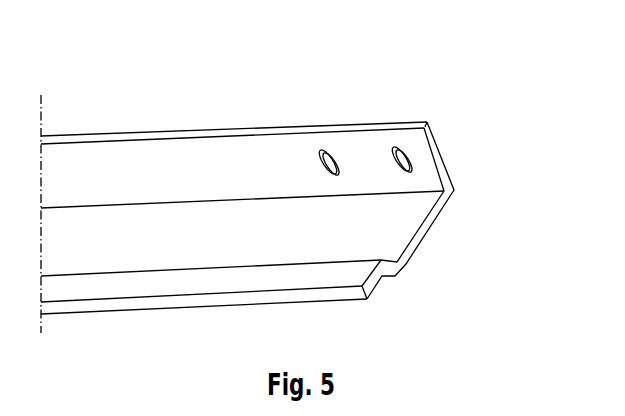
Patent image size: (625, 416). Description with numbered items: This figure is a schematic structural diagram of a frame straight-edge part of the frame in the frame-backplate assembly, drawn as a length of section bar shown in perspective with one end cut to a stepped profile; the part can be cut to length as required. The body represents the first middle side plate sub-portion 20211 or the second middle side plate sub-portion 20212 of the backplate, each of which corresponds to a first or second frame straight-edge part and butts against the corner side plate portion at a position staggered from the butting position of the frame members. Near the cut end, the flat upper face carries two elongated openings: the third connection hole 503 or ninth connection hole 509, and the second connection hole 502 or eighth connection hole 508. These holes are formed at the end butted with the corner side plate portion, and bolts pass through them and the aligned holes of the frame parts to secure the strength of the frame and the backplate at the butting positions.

The first middle side plate sub-portion 20211 is at (247, 171).
The second middle side plate sub-portion 20212 is at (245, 175).
The third connection hole 503 is at (360, 113).
The ninth connection hole 509 is at (383, 83).
The second connection hole 502 is at (467, 112).
The eighth connection hole 508 is at (403, 147).